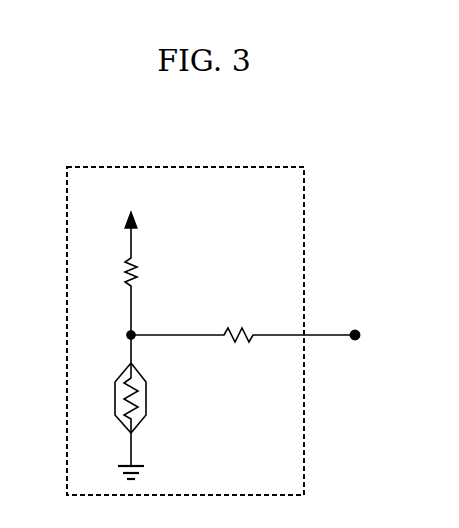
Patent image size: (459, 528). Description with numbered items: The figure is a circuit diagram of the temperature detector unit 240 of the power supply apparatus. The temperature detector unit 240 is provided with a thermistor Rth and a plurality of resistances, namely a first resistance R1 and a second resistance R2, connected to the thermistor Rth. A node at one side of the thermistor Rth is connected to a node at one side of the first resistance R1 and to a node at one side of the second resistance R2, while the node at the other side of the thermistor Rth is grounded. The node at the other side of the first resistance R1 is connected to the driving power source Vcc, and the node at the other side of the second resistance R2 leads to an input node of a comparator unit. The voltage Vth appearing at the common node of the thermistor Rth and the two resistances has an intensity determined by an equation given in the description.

The temperature detector unit 240 is at (282, 167).
The first resistance R1 is at (143, 272).
The second resistance R2 is at (238, 325).
The thermistor Rth is at (145, 398).
The driving power source Vcc is at (131, 224).
The element Vth is at (114, 335).